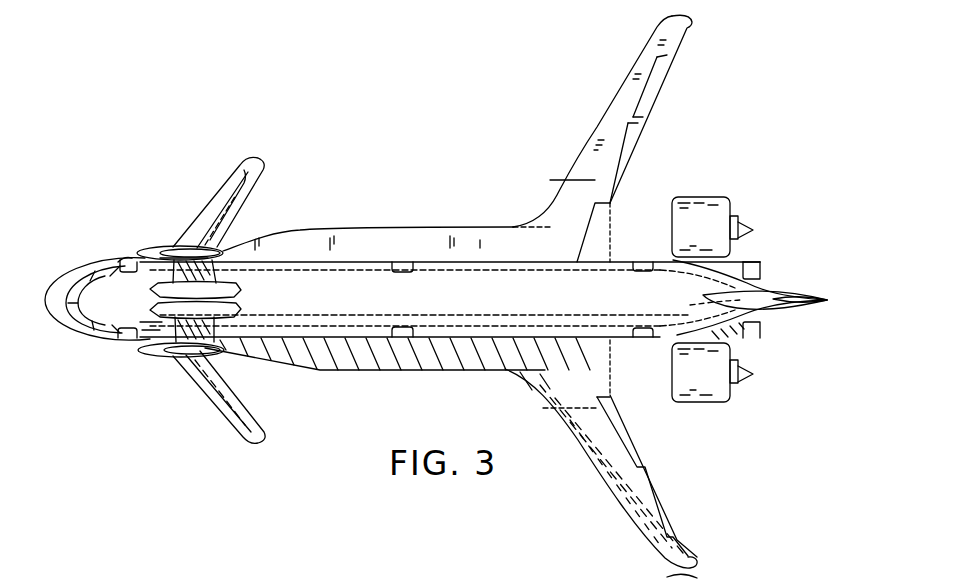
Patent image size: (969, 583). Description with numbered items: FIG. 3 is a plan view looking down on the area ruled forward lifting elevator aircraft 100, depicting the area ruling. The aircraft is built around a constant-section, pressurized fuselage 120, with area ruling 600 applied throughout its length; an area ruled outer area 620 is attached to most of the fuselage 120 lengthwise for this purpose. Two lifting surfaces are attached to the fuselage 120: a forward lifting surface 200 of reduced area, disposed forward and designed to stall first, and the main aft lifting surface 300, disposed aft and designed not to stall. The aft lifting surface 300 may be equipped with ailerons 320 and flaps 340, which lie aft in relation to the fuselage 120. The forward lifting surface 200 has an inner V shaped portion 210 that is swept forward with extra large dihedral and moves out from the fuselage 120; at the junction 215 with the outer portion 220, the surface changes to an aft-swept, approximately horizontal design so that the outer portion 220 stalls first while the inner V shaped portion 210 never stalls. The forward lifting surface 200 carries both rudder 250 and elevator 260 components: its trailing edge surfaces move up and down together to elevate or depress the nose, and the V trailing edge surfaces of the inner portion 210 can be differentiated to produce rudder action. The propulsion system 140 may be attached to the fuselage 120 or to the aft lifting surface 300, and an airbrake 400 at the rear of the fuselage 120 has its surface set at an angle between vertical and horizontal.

The area ruled forward lifting elevator aircraft 100 is at (458, 432).
The fuselage 120 is at (297, 260).
The aircraft propulsion system 140 is at (730, 210).
The forward lifting surface 200 is at (245, 261).
The inner V shaped portion 210 is at (140, 262).
The junction 215 is at (160, 247).
The outer portion 220 is at (183, 240).
The rudder 250 is at (221, 252).
The elevator 260 is at (218, 210).
The aft lifting surface 300 is at (621, 138).
The ailerons 320 is at (657, 95).
The flaps 340 is at (633, 150).
The airbrake 400 is at (819, 343).
The area ruling 600 is at (463, 218).
The area ruled outer area 620 is at (322, 368).